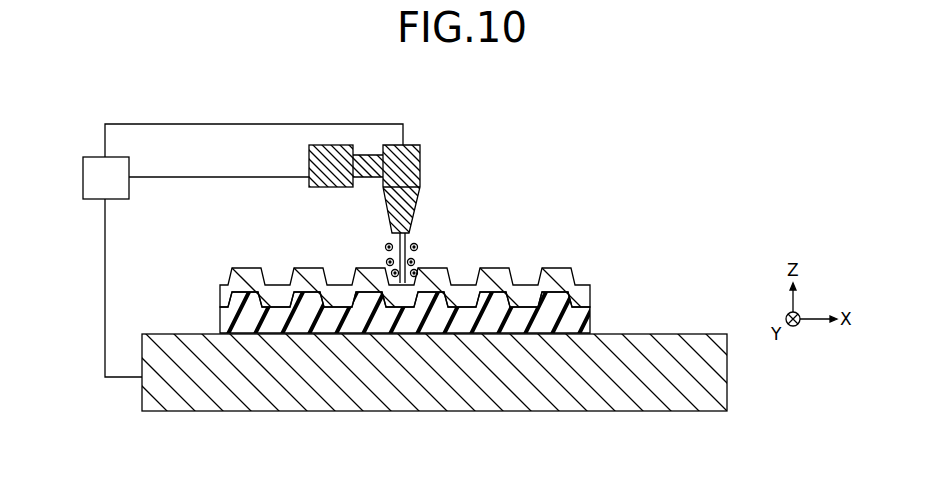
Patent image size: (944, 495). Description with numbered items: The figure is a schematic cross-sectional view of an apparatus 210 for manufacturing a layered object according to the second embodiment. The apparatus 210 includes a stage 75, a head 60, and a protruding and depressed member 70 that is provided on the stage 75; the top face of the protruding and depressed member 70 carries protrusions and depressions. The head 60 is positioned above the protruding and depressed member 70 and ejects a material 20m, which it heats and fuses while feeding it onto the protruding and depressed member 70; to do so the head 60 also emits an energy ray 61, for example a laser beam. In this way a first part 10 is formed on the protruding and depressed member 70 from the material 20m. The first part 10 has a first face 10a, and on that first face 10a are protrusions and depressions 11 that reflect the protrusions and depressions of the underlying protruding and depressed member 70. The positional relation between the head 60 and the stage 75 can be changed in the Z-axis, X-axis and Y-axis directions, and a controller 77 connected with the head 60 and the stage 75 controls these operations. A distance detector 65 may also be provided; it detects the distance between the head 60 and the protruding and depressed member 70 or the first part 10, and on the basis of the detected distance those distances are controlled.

The apparatus for manufacturing a layered object 210 is at (692, 217).
The controller 77 is at (90, 156).
The distance detector 65 is at (308, 170).
The head 60 is at (417, 197).
The energy ray 61 is at (406, 238).
The material 20m is at (418, 262).
The first part 10 is at (414, 256).
The first face 10a is at (553, 268).
The protrusions and depressions 11 is at (250, 267).
The protruding and depressed member 70 is at (578, 325).
The stage 75 is at (678, 375).